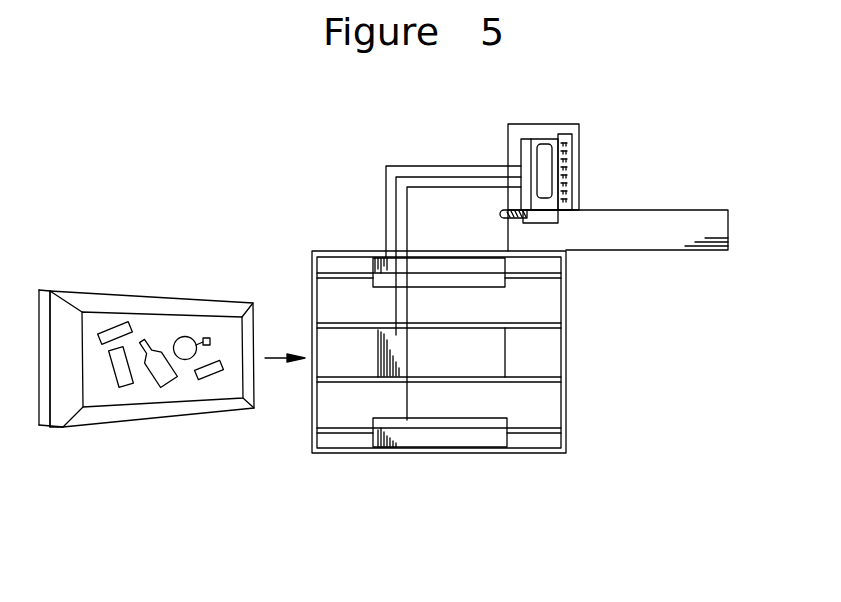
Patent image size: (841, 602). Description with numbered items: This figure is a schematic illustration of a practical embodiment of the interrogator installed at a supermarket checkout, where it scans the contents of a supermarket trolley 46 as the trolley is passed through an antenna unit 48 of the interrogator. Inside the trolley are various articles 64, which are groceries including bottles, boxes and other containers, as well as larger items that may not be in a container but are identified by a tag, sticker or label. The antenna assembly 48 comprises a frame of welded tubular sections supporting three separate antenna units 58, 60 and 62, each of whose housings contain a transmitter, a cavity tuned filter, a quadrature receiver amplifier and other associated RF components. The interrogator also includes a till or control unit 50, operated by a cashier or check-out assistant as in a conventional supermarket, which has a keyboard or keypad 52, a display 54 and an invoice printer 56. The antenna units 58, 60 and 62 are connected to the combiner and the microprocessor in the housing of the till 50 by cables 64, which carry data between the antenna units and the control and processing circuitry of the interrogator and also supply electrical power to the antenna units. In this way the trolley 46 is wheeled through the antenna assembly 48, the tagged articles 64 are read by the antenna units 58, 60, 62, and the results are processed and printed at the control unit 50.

The supermarket trolley 46 is at (92, 427).
The antenna unit 48 is at (566, 432).
The till or control unit 50 is at (524, 158).
The keyboard or keypad 52 is at (568, 132).
The display 54 is at (545, 147).
The invoice printer 56 is at (557, 215).
The antenna unit 58 is at (497, 286).
The antenna unit 60 is at (498, 352).
The antenna unit 62 is at (457, 442).
The articles 64 is at (386, 191).